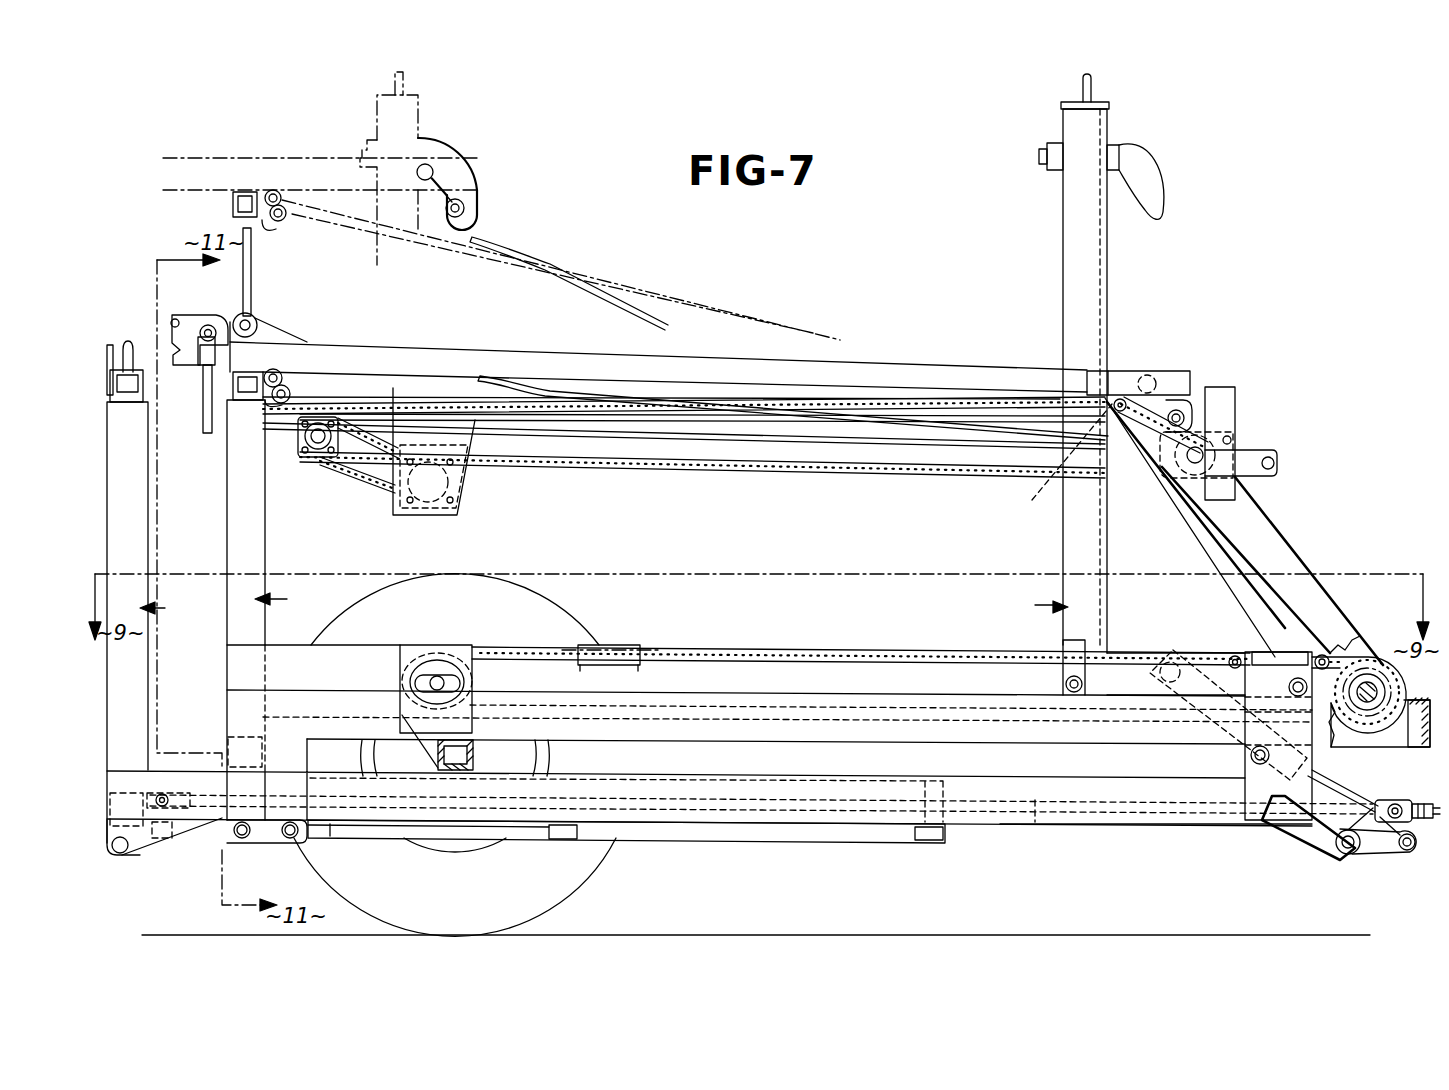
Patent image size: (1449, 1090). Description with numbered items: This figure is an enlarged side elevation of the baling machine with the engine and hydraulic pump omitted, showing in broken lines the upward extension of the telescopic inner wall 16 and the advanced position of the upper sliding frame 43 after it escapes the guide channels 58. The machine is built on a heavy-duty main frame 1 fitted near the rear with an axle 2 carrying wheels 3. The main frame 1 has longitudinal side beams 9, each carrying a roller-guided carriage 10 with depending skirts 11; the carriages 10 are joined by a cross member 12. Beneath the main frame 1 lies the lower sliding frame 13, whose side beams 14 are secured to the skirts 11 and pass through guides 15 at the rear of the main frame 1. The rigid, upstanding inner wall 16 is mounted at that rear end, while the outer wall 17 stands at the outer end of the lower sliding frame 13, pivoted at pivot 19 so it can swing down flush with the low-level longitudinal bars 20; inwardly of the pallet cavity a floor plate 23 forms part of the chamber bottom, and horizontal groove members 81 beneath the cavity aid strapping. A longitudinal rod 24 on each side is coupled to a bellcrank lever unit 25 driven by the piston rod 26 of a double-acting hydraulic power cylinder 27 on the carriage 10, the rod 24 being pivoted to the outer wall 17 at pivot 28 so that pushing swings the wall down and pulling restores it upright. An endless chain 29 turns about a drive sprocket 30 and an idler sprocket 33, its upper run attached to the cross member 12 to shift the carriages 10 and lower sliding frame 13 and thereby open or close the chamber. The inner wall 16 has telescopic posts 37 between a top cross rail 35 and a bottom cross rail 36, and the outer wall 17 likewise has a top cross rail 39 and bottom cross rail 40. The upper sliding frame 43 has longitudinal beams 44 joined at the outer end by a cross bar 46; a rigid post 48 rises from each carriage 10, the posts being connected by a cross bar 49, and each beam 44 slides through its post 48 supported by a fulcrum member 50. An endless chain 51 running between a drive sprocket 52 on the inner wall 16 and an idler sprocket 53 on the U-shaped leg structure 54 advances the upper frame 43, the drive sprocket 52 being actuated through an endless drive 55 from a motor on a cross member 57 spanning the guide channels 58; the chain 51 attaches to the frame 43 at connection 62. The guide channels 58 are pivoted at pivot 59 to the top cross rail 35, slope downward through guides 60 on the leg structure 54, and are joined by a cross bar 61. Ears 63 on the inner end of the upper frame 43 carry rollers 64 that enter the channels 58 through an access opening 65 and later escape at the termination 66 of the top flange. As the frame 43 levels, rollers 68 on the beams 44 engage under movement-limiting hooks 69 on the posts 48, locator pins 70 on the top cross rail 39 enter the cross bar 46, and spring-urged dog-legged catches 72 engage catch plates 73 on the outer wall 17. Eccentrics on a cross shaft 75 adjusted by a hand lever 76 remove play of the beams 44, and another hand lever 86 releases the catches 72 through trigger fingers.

The main frame 1 is at (1004, 770).
The axle 2 is at (438, 760).
The wheels 3 is at (582, 856).
The side beams 9 is at (848, 692).
The carriage 10 is at (1036, 605).
The skirts 11 is at (1250, 758).
The cross member 12 is at (1272, 655).
The lower sliding frame 13 is at (1112, 830).
The side beams 14 is at (796, 845).
The guides 15 is at (258, 845).
The inner wall 16 is at (285, 599).
The outer wall 17 is at (165, 605).
The pivot 19 is at (120, 853).
The longitudinal bars 20 is at (383, 838).
The floor plate 23 is at (897, 778).
The longitudinal rod 24 is at (1310, 840).
The bellcrank lever unit 25 is at (1383, 848).
The piston rod 26 is at (1330, 790).
The double-acting hydraulic power cylinder 27 is at (1208, 745).
The pivot 28 is at (158, 838).
The endless chain 29 is at (728, 650).
The drive sprocket 30 is at (1375, 665).
The idler sprocket 33 is at (447, 662).
The top cross rail 35 is at (246, 390).
The bottom cross rail 36 is at (228, 730).
The telescopic posts 37 is at (265, 535).
The top cross rail 39 is at (130, 395).
The bottom cross rail 40 is at (125, 793).
The upper sliding frame 43 is at (272, 152).
The longitudinal beams 44 is at (680, 352).
The cross bar 46 is at (212, 352).
The post 48 is at (390, 112).
The cross bar 49 is at (1083, 88).
The fulcrum member 50 is at (1056, 462).
The endless chain 51 is at (938, 395).
The drive sprocket 52 is at (300, 458).
The idler sprocket 53 is at (1222, 452).
The U-shaped leg structure 54 is at (1270, 528).
The endless drive 55 is at (360, 472).
The cross member 57 is at (415, 518).
The guide channels 58 is at (888, 440).
The pivot 59 is at (285, 225).
The guides 60 is at (1220, 388).
The cross bar 61 is at (1280, 462).
The connection 62 is at (1122, 398).
The ears 63 is at (1185, 395).
The rollers 64 is at (1192, 418).
The access opening 65 is at (1168, 470).
The termination 66 is at (485, 248).
The rollers 68 is at (1150, 375).
The movement-limiting hooks 69 is at (1153, 175).
The locator pins 70 is at (124, 342).
The dog-legged catches 72 is at (205, 310).
The catch plates 73 is at (108, 345).
The cross shaft 75 is at (257, 320).
The hand lever 76 is at (251, 272).
The groove members 81 is at (332, 836).
The hand lever 86 is at (203, 415).